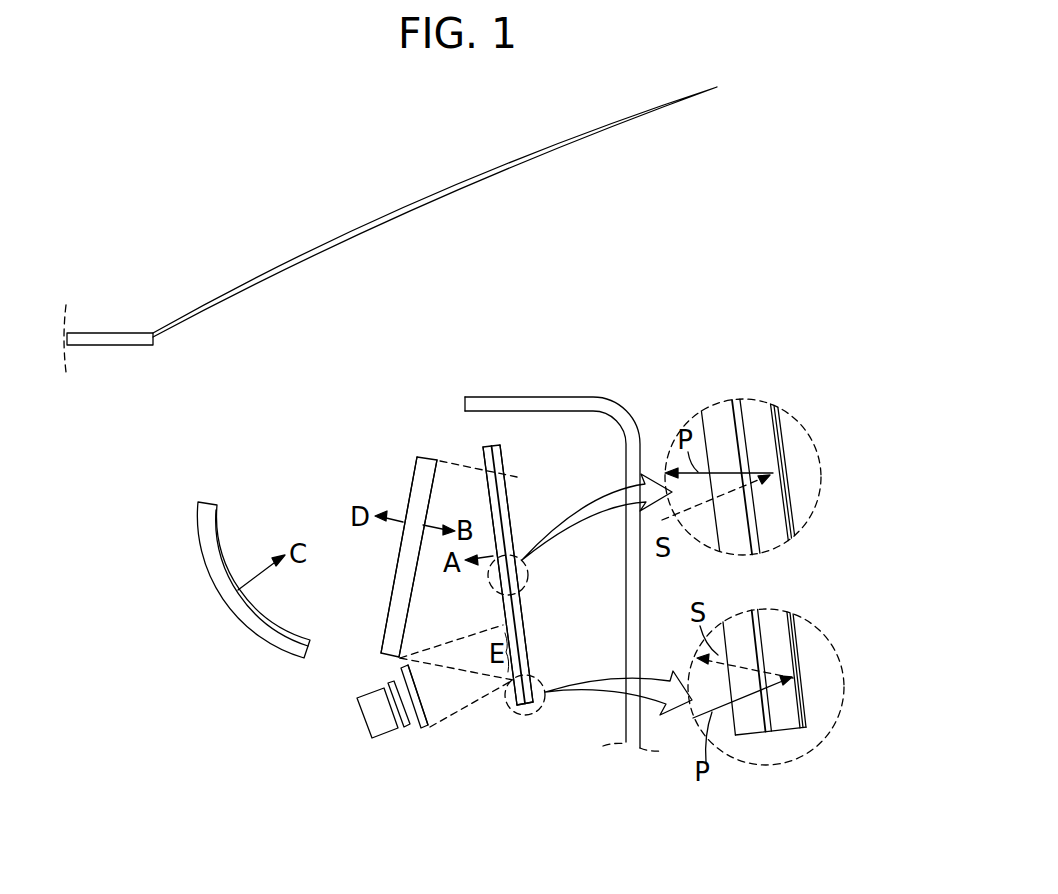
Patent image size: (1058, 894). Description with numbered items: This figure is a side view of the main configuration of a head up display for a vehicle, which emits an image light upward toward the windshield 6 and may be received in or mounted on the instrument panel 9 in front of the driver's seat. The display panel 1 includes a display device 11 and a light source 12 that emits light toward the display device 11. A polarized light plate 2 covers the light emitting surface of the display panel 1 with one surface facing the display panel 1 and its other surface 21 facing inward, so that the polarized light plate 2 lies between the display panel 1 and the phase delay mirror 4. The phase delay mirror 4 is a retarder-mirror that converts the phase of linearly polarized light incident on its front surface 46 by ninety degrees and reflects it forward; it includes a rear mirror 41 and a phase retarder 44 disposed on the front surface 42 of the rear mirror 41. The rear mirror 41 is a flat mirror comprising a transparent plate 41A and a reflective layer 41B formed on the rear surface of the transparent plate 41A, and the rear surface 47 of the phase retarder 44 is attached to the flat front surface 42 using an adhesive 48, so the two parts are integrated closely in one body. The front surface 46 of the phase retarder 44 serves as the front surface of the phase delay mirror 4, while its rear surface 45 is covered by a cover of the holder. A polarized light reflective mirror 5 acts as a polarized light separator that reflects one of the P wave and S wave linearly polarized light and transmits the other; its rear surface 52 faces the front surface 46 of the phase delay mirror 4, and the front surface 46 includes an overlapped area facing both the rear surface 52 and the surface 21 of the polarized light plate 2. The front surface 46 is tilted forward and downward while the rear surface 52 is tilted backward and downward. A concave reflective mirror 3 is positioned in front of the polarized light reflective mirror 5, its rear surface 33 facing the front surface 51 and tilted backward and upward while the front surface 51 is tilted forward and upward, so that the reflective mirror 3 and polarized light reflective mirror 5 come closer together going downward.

The display panel 1 is at (398, 738).
The polarized light plate 2 is at (437, 719).
The reflective mirror 3 is at (227, 560).
The phase delay mirror 4 is at (682, 577).
The polarized light reflective mirror 5 is at (420, 524).
The windshield 6 is at (534, 150).
The instrument panel 9 is at (573, 400).
The display device 11 is at (413, 728).
The light source 12 is at (362, 714).
The other surface of the polarized light plate 21 is at (420, 694).
The rear surface of the reflective mirror 33 is at (223, 543).
The rear mirror 41 is at (680, 577).
The transparent plate 41A is at (768, 418).
The reflective layer 41B is at (780, 440).
The front surface of the rear mirror 42 is at (783, 470).
The phase retarder 44 is at (525, 708).
The rear surface of the phase delay mirror 45 is at (530, 637).
The front surface of the phase retarder 46 is at (550, 760).
The rear surface of the phase retarder 47 is at (733, 425).
The adhesive 48 is at (742, 418).
The front surface of the polarized light reflective mirror 51 is at (412, 488).
The rear surface of the polarized light reflective mirror 52 is at (432, 486).